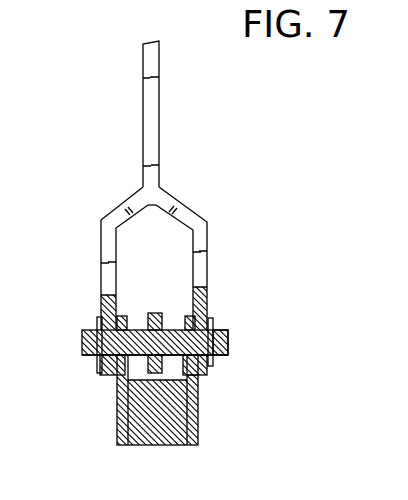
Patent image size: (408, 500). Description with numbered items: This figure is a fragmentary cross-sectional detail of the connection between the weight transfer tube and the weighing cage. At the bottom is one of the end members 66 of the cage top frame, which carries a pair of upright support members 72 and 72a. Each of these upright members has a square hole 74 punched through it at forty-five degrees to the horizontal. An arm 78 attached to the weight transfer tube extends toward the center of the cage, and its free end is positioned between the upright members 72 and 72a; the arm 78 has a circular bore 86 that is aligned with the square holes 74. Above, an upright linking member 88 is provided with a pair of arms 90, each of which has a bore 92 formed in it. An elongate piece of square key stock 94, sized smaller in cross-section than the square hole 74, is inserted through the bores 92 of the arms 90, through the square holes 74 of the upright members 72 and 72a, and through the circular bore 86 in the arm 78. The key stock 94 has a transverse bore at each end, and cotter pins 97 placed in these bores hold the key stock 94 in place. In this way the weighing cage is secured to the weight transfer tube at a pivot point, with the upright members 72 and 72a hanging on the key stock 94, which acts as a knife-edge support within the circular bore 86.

The upright linking member 88 is at (158, 140).
The arms 90 is at (100, 245).
The arms 78 is at (158, 312).
The bore 92 is at (84, 352).
The square key stock 94 is at (228, 341).
The cotter pins 97 is at (97, 322).
The square hole 74 is at (120, 360).
The circular bore 86 is at (214, 378).
The upright support member 72 is at (117, 425).
The upright support member 72a is at (198, 420).
The end members 66 is at (145, 440).